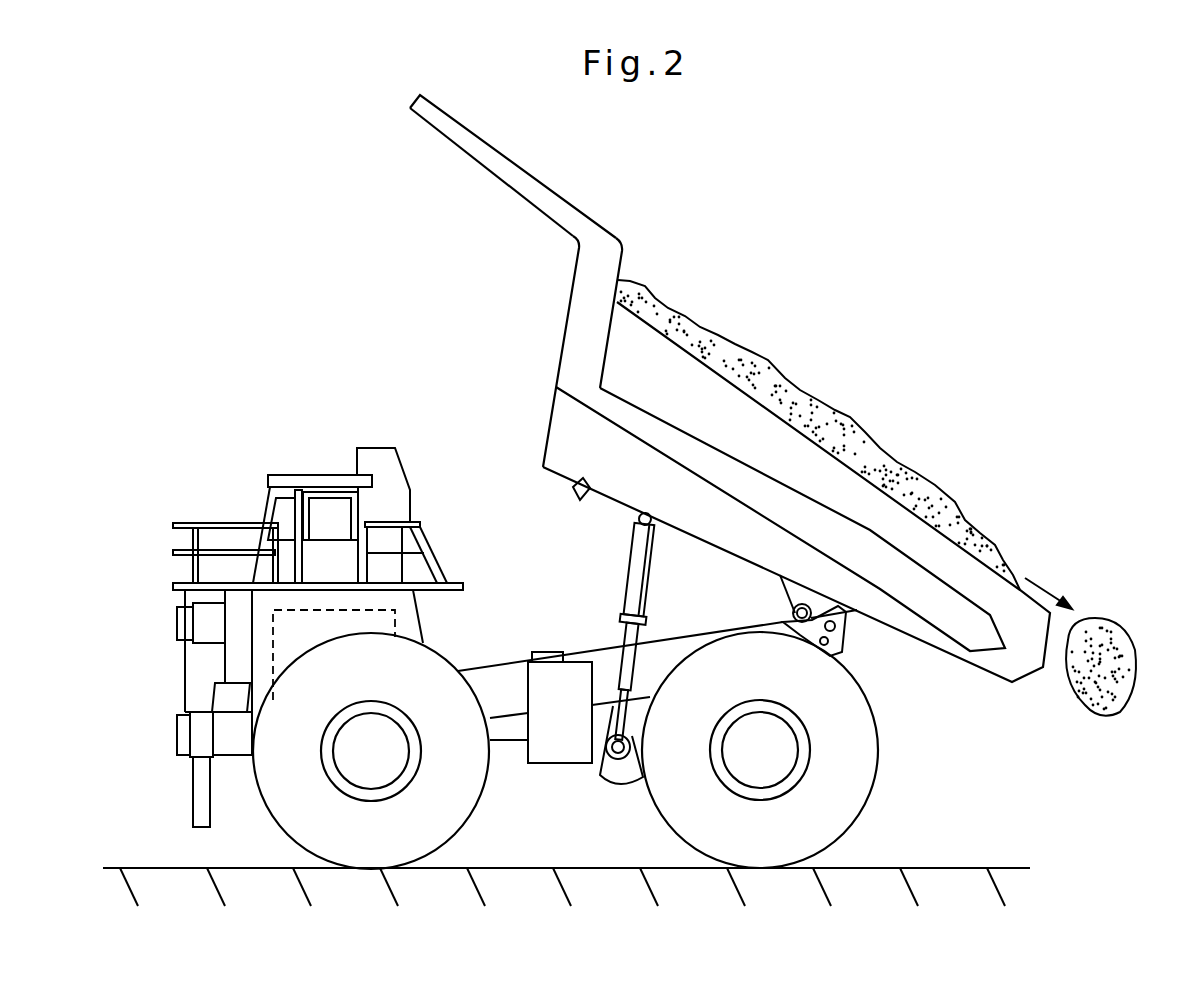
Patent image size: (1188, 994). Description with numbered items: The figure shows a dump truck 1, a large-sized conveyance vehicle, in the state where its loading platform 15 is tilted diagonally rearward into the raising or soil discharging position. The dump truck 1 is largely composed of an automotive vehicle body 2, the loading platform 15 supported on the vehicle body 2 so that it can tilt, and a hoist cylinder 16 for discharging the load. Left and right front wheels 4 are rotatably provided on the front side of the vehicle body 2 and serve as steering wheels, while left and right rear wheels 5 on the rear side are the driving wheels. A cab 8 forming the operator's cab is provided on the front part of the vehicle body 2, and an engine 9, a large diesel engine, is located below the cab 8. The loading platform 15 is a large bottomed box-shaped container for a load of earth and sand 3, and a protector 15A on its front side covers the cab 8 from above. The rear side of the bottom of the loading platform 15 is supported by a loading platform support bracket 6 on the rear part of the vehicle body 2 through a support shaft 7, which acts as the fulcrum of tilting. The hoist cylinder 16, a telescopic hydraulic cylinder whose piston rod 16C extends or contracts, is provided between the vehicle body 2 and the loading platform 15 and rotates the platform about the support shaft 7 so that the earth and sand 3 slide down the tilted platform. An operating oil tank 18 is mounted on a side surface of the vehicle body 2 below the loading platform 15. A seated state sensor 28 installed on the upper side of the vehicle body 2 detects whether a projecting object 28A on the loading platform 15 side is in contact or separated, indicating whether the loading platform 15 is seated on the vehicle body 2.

The dump truck 1 is at (295, 432).
The vehicle body 2 is at (500, 697).
The earth and sand 3 is at (912, 480).
The front wheel 4 is at (263, 792).
The rear wheel 5 is at (865, 753).
The loading platform support bracket 6 is at (815, 630).
The support shaft 7 is at (790, 612).
The cab 8 is at (278, 490).
The engine 9 is at (282, 645).
The loading platform 15 is at (673, 357).
The protector 15A is at (450, 125).
The hoist cylinder 16 is at (636, 566).
The piston rod 16C is at (606, 767).
The operating oil tank 18 is at (548, 755).
The seated state sensor 28 is at (540, 652).
The projecting object 28A is at (574, 493).